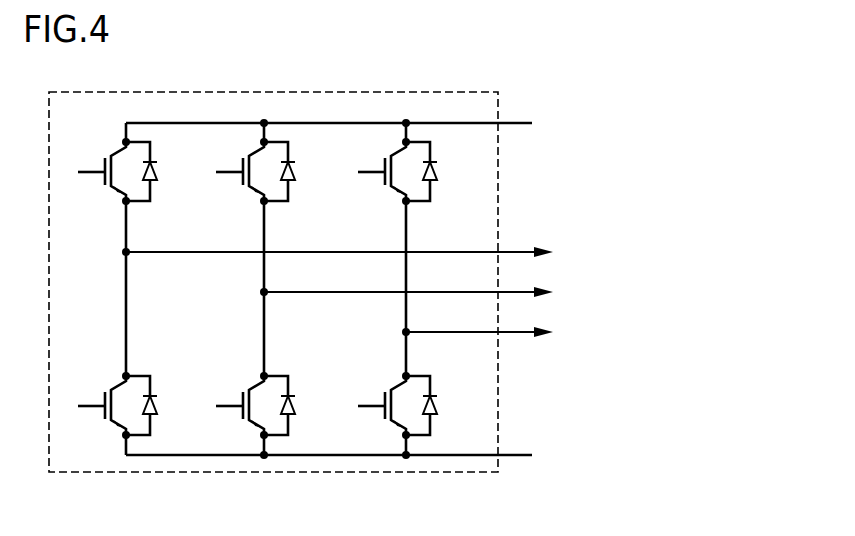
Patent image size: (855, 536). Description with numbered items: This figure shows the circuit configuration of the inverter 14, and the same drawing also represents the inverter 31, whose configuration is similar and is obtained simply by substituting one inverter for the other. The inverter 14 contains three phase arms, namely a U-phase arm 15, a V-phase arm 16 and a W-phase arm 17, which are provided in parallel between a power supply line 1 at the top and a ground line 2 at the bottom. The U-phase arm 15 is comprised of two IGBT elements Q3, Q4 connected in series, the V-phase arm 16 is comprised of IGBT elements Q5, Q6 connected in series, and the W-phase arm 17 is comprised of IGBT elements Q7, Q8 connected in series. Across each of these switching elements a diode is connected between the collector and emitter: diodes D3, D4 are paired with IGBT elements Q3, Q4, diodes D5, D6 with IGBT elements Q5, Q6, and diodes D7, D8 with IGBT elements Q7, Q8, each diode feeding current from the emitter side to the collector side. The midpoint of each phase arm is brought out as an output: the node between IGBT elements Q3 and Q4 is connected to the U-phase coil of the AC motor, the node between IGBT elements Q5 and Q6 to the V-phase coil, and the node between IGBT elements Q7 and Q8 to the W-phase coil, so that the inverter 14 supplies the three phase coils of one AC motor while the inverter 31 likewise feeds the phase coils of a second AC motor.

The inverter 14 is at (423, 265).
The inverter 31 is at (375, 92).
The power supply line 1 is at (513, 123).
The ground line 2 is at (513, 455).
The U-phase arm 15 is at (117, 266).
The V-phase arm 16 is at (254, 307).
The W-phase arm 17 is at (395, 347).
The IGBT element Q3 is at (109, 171).
The IGBT element Q4 is at (109, 405).
The IGBT element Q5 is at (247, 171).
The IGBT element Q6 is at (247, 405).
The IGBT element Q7 is at (389, 171).
The IGBT element Q8 is at (389, 405).
The diode D3 is at (173, 199).
The diode D4 is at (173, 434).
The diode D5 is at (311, 199).
The diode D6 is at (311, 434).
The diode D7 is at (453, 199).
The diode D8 is at (453, 434).